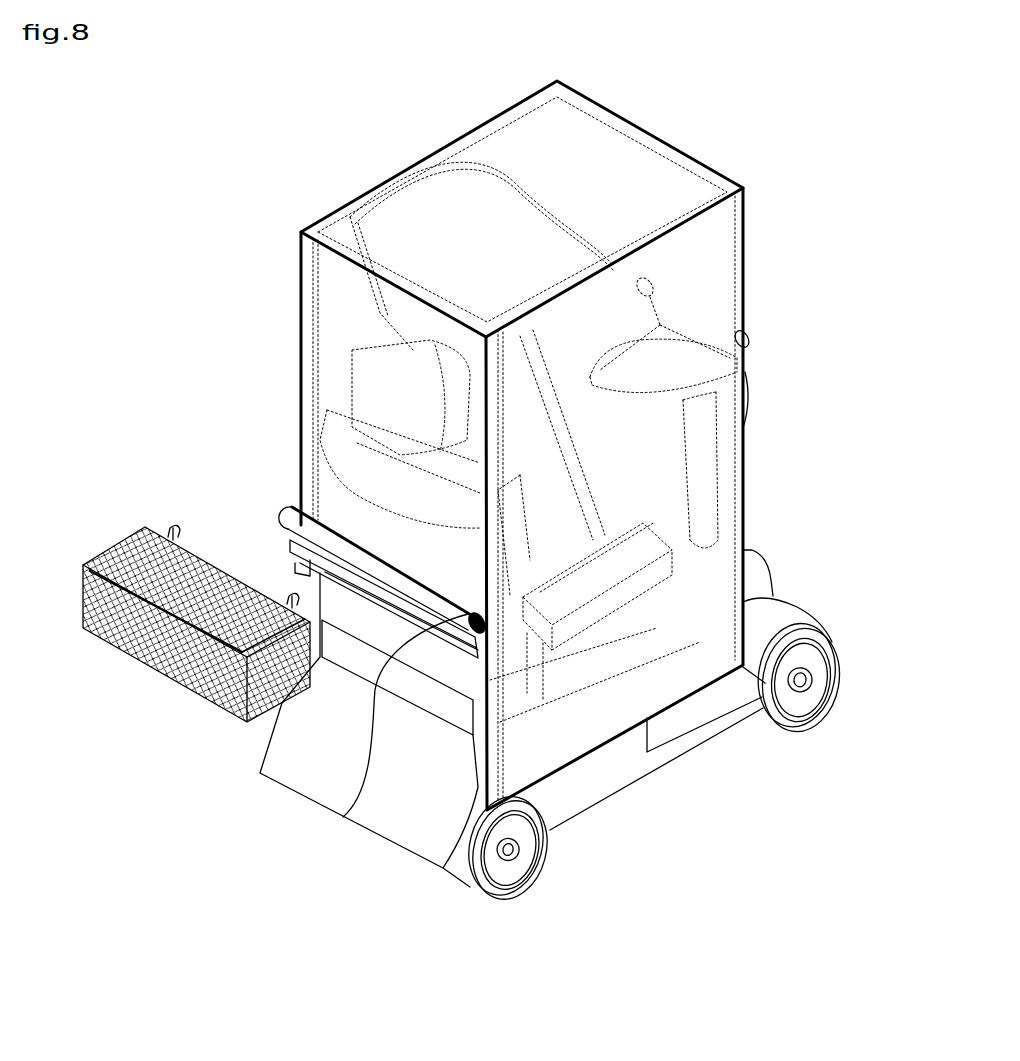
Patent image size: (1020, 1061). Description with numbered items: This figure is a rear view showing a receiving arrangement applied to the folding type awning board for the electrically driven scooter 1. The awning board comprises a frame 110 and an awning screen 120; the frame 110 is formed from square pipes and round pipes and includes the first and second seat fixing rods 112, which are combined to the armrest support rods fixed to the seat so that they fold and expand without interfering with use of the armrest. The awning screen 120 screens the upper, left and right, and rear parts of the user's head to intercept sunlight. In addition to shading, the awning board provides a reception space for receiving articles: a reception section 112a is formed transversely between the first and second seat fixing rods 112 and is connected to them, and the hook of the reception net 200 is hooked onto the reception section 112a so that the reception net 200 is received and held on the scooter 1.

The electrically driven scooter 1 is at (617, 782).
The frame 110 is at (300, 347).
The first and second seat fixing rods 112 is at (300, 452).
The reception section 112a is at (343, 817).
The awning screen 120 is at (745, 280).
The reception net 200 is at (142, 664).